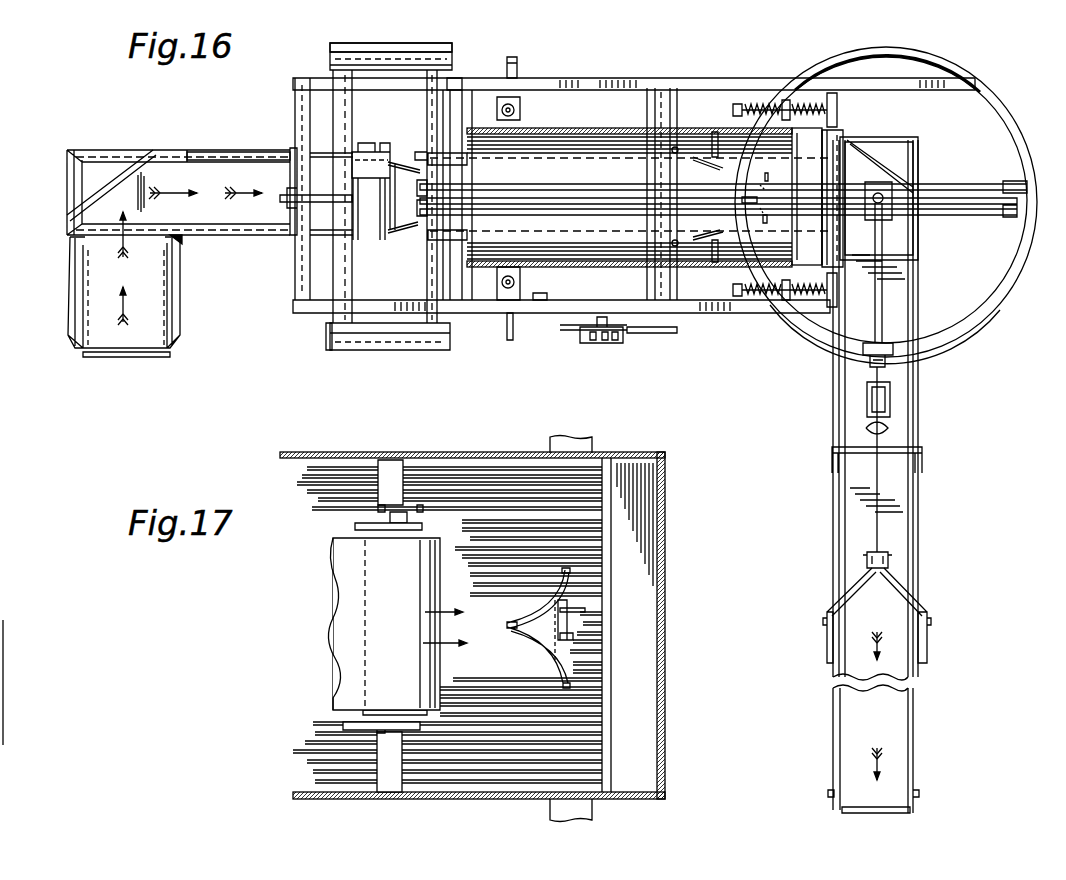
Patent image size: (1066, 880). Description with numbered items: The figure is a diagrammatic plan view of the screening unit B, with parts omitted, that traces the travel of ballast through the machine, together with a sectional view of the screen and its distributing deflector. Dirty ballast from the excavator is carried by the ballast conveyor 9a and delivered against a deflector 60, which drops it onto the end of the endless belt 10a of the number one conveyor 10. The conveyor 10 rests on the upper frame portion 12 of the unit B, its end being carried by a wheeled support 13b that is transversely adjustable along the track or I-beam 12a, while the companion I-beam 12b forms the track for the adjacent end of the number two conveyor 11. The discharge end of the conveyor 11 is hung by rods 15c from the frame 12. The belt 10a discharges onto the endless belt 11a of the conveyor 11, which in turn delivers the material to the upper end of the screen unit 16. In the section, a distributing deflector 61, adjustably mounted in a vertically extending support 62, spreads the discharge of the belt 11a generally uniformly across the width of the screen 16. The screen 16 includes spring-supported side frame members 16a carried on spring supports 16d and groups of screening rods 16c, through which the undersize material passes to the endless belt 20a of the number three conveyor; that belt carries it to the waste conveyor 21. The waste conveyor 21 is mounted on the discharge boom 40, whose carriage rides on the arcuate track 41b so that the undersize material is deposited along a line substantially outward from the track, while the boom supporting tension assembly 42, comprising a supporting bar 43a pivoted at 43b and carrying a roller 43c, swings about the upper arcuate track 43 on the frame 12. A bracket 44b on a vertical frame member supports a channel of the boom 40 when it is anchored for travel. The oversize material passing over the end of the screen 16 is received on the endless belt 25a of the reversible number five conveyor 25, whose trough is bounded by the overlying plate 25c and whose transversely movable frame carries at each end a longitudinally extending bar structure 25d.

In FIG. 16, the ballast conveyor 9a is at (146, 340).
In FIG. 16, the number 1 conveyor 10 is at (166, 149).
In FIG. 16, the endless belt 10a is at (208, 178).
In FIG. 16, the number 2 conveyor 11 is at (577, 167).
In FIG. 17, the number 2 conveyor 11 is at (355, 527).
In FIG. 16, the endless belt 11a is at (528, 175).
In FIG. 17, the endless belt 11a is at (342, 587).
In FIG. 16, the upper frame portion 12 is at (703, 82).
In FIG. 16, the I-beam 12a is at (296, 282).
In FIG. 16, the I-beam 12b is at (467, 97).
In FIG. 16, the wheeled support 13b is at (297, 200).
In FIG. 16, the rods 15c is at (677, 247).
In FIG. 16, the screen unit 16 is at (695, 130).
In FIG. 17, the screen unit 16 is at (423, 452).
In FIG. 16, the side frame members 16a is at (593, 267).
In FIG. 17, the side frame members 16a is at (497, 452).
In FIG. 16, the screening rods 16c is at (610, 147).
In FIG. 17, the screening rods 16c is at (306, 479).
In FIG. 16, the spring supports 16d is at (512, 104).
In FIG. 16, the endless belt 20a is at (836, 152).
In FIG. 16, the waste conveyor 21 is at (900, 535).
In FIG. 16, the number 5 conveyor 25 is at (450, 74).
In FIG. 16, the endless belt 25a is at (393, 70).
In FIG. 16, the plate 25c is at (326, 330).
In FIG. 16, the end support or bar structure 25d is at (358, 42).
In FIG. 16, the discharge boom 40 is at (833, 533).
In FIG. 16, the arcuate track 41b is at (1010, 278).
In FIG. 16, the boom supporting tension assembly 42 is at (881, 490).
In FIG. 16, the arcuate track 43 is at (994, 104).
In FIG. 16, the supporting bar 43a is at (883, 252).
In FIG. 16, the pivot 43b is at (886, 205).
In FIG. 16, the roller 43c is at (893, 355).
In FIG. 16, the bracket 44b is at (512, 57).
In FIG. 16, the deflector 60 is at (112, 186).
In FIG. 16, the distributing deflector 61 is at (763, 180).
In FIG. 17, the distributing deflector 61 is at (540, 612).
In FIG. 17, the vertically extending support 62 is at (580, 611).
In FIG. 16, the screening unit B is at (586, 79).